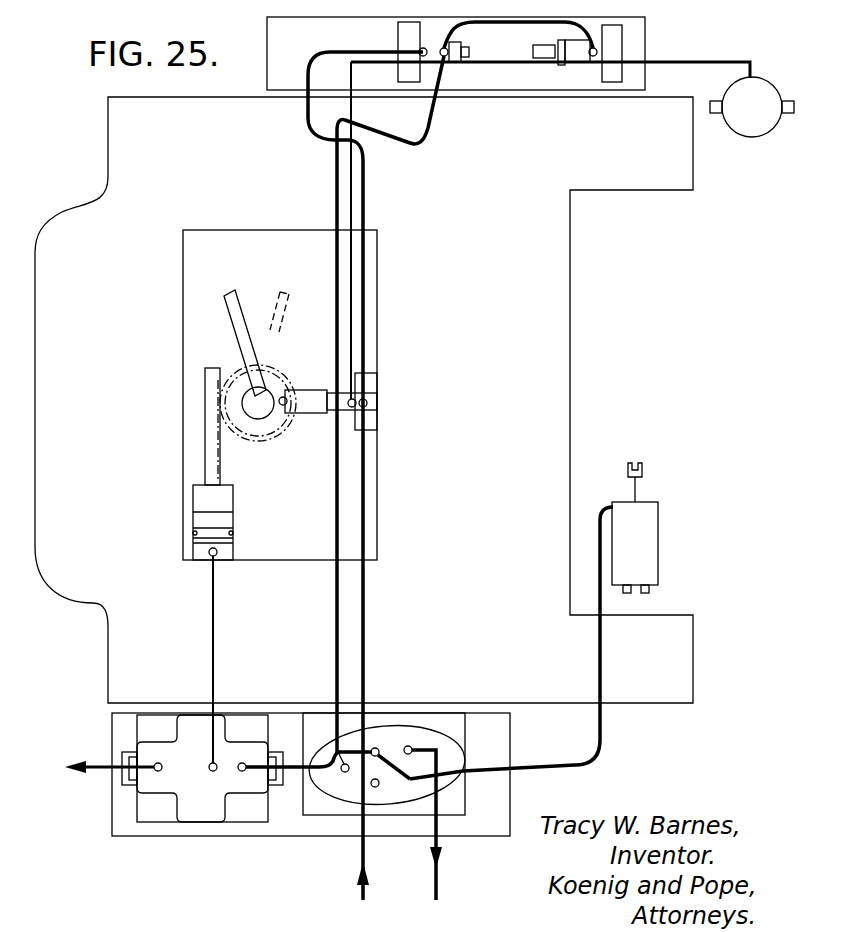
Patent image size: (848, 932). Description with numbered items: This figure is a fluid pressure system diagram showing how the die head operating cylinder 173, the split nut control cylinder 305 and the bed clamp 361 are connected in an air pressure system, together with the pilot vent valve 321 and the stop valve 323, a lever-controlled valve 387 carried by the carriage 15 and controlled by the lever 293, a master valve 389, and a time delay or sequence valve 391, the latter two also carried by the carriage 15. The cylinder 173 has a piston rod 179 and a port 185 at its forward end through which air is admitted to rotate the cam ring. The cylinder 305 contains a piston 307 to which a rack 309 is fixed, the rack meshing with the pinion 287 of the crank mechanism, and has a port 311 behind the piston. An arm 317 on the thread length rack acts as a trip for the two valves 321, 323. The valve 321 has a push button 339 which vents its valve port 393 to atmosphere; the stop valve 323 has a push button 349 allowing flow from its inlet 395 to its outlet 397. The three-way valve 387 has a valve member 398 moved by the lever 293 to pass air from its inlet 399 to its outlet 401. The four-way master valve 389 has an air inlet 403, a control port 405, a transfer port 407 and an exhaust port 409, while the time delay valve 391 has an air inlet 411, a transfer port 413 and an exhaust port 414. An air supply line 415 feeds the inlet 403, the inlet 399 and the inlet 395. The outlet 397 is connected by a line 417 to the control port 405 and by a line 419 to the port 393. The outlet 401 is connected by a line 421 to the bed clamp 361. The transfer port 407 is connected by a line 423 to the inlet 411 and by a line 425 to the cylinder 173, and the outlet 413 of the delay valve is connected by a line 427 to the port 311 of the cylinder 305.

The carriage 15 is at (85, 605).
The air cylinder 173 is at (655, 547).
The piston rod 179 is at (640, 491).
The port 185 is at (609, 505).
The pinion 287 is at (244, 438).
The lever 293 is at (283, 290).
The air cylinder 305 is at (198, 508).
The piston 307 is at (200, 522).
The rack 309 is at (205, 396).
The port 311 is at (220, 551).
The arm 317 is at (545, 62).
The pilot vent valve 321 is at (628, 46).
The stop valve 323 is at (405, 44).
The push button 339 is at (556, 46).
The push button 349 is at (463, 49).
The bed clamp 361 is at (752, 132).
The lever-controlled valve 387 is at (326, 414).
The master valve 389 is at (460, 788).
The time delay valve 391 is at (200, 812).
The valve port 393 is at (588, 58).
The valve inlet 395 is at (426, 48).
The valve outlet 397 is at (449, 57).
The valve member 398 is at (284, 396).
The valve inlet 399 is at (357, 401).
The valve outlet 401 is at (366, 419).
The valve inlet 403 is at (379, 785).
The control port 405 is at (344, 772).
The transfer port 407 is at (375, 748).
The exhaust port 409 is at (408, 747).
The air inlet 411 is at (243, 772).
The transfer port 413 is at (131, 767).
The exhaust port 414 is at (158, 772).
The air supply line 415 is at (334, 50).
The line 417 is at (432, 118).
The line 419 is at (524, 22).
The line 421 is at (662, 64).
The line 423 is at (291, 771).
The line 425 is at (568, 764).
The line 427 is at (214, 650).